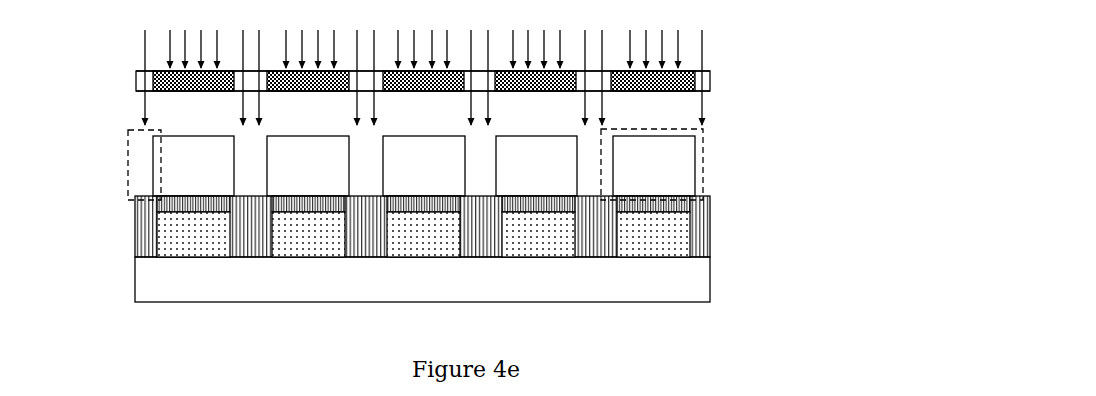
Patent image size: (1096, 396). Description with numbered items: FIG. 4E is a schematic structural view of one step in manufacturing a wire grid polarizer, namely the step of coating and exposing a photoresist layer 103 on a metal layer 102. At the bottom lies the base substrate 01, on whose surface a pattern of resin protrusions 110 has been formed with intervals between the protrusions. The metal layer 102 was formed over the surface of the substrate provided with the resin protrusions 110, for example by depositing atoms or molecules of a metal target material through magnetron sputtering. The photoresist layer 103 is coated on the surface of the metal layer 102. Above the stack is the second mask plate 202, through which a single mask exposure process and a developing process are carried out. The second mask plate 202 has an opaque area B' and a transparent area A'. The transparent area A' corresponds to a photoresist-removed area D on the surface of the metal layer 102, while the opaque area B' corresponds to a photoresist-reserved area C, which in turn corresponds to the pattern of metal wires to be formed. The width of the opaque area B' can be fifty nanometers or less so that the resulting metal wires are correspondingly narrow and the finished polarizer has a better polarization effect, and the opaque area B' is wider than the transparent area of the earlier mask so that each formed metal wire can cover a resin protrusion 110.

The second mask plate 202 is at (798, 17).
The opaque area B' is at (461, 41).
The transparent area A' is at (465, 106).
The photoresist layer 103 is at (687, 147).
The photoresist-reserved area C is at (702, 180).
The photoresist-removed area D is at (132, 163).
The metal layer 102 is at (697, 218).
The resin protrusions 110 is at (690, 243).
The base substrate 01 is at (702, 293).